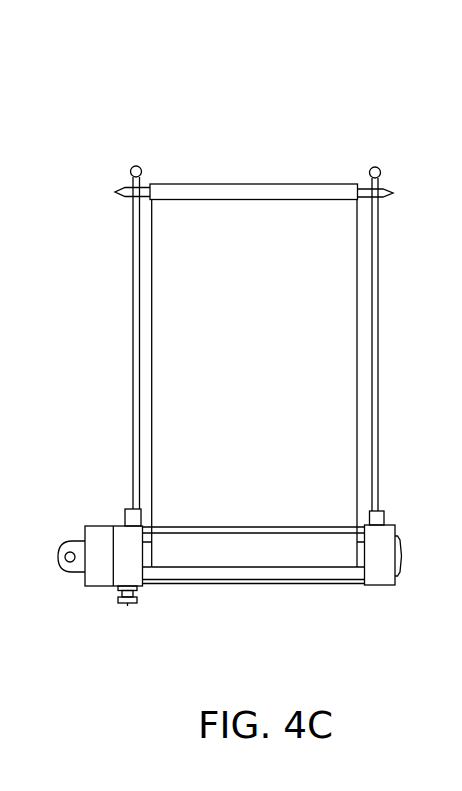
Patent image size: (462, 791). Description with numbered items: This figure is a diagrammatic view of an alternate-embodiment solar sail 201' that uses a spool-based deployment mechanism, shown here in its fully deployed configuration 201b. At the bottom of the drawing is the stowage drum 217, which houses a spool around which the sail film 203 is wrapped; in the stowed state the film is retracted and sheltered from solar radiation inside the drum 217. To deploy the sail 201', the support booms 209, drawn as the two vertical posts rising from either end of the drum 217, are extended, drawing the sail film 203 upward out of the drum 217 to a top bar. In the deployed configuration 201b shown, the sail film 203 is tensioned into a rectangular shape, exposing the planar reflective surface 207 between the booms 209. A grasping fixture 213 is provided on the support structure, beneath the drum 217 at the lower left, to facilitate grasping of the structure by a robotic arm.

The deployed configuration 201b is at (185, 140).
The solar sail 201' is at (350, 289).
The sail film 203 is at (327, 290).
The planar reflective surface 207 is at (275, 383).
The support booms 209 is at (137, 339).
The grasping fixture 213 is at (128, 605).
The stowage drum 217 is at (317, 547).